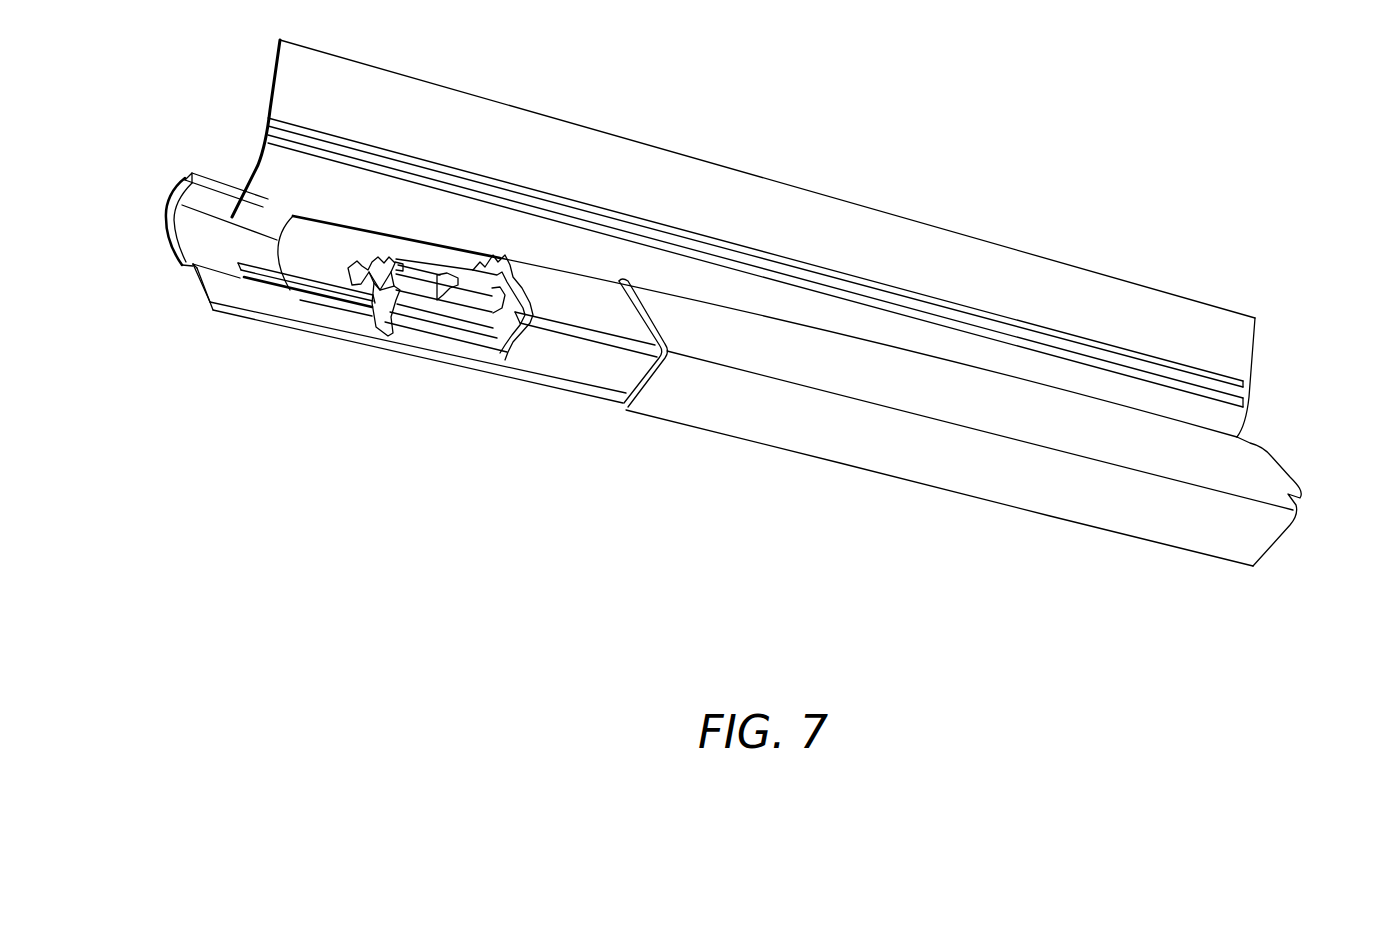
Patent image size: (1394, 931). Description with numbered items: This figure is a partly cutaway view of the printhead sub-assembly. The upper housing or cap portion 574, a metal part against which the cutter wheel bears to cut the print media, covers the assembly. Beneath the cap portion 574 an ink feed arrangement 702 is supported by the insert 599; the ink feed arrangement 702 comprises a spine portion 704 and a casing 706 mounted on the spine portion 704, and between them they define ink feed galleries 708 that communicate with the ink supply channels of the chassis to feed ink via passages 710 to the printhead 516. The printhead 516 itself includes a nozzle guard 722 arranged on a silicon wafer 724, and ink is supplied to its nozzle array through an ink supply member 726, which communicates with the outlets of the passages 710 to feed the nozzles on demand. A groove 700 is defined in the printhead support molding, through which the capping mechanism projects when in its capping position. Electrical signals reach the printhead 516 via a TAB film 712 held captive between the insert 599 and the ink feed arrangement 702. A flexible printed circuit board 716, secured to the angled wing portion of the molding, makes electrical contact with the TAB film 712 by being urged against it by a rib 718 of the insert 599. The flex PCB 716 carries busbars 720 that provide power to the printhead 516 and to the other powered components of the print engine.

The flexible printed circuit board 716 is at (1249, 350).
The busbars 720 is at (1248, 394).
The rib 718 is at (184, 182).
The TAB film 712 is at (287, 249).
The printhead 516 is at (202, 275).
The insert 599 is at (208, 303).
The nozzle guard 722 is at (243, 295).
The silicon wafer 724 is at (307, 307).
The ink supply member 726 is at (360, 293).
The ink feed galleries 708 is at (361, 262).
The spine portion 704 is at (388, 306).
The passages 710 is at (452, 270).
The ink feed arrangement 702 is at (497, 265).
The groove 700 is at (497, 318).
The casing 706 is at (577, 367).
The cap portion 574 is at (1277, 480).